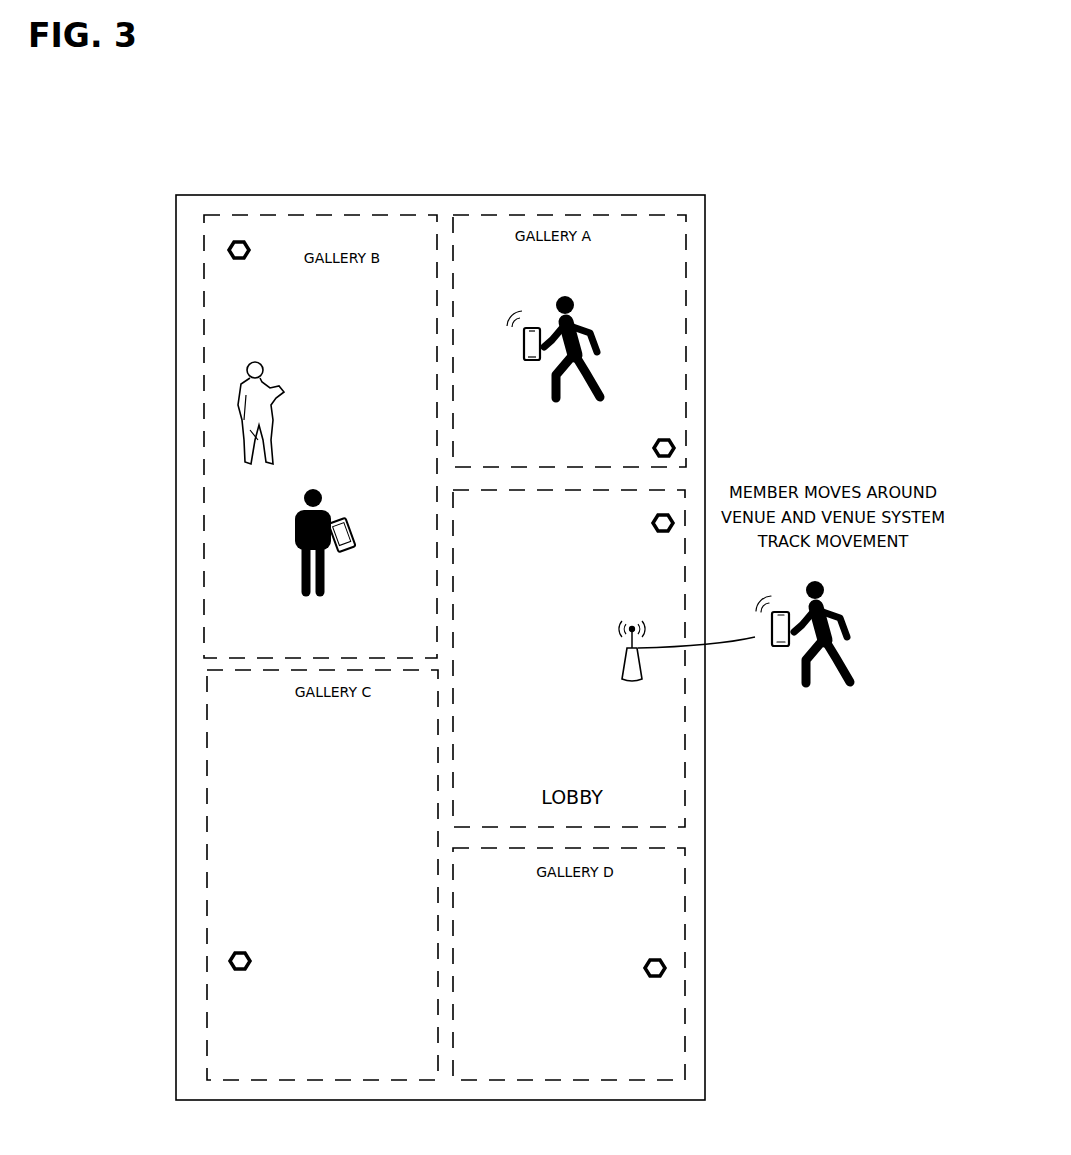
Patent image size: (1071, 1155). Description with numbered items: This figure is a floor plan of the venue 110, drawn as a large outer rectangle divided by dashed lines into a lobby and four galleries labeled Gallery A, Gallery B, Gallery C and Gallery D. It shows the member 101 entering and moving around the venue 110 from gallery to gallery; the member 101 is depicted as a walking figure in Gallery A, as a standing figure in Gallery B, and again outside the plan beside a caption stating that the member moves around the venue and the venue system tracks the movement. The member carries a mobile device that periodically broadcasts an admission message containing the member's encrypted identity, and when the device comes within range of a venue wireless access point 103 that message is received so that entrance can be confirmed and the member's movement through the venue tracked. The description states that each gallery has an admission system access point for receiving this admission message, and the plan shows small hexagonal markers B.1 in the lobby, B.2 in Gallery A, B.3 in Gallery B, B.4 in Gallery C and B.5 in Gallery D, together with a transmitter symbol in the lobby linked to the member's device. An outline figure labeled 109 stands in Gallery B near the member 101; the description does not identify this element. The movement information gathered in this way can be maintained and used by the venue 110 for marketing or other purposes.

The venue 110 is at (705, 247).
The member 101 is at (634, 322).
The venue wireless access point 103 is at (517, 352).
The exhibit item 109 is at (273, 383).
The beacon B.1 is at (654, 532).
The beacon B.2 is at (655, 444).
The beacon B.3 is at (249, 253).
The beacon B.4 is at (250, 960).
The beacon B.5 is at (645, 967).